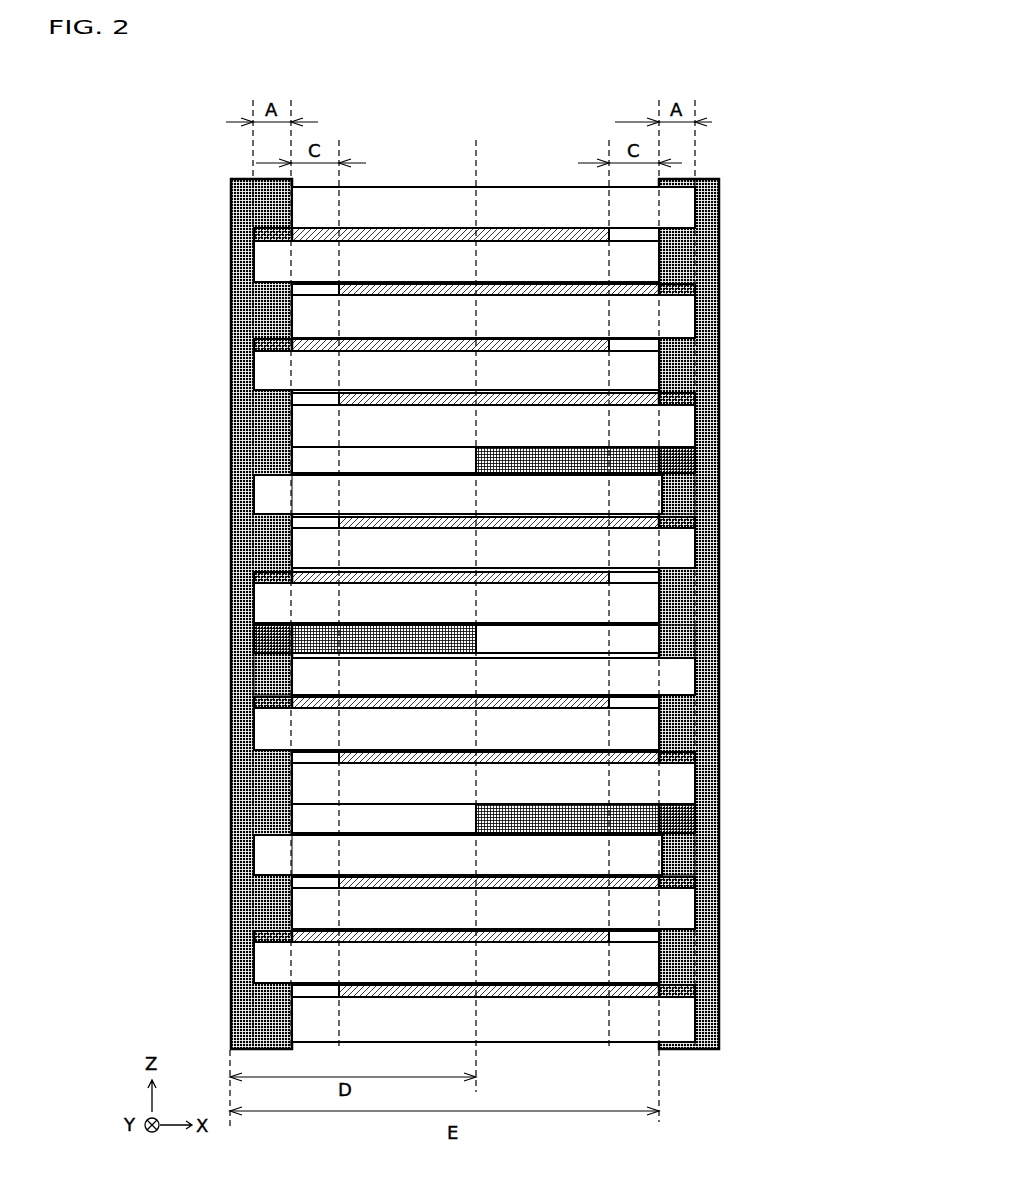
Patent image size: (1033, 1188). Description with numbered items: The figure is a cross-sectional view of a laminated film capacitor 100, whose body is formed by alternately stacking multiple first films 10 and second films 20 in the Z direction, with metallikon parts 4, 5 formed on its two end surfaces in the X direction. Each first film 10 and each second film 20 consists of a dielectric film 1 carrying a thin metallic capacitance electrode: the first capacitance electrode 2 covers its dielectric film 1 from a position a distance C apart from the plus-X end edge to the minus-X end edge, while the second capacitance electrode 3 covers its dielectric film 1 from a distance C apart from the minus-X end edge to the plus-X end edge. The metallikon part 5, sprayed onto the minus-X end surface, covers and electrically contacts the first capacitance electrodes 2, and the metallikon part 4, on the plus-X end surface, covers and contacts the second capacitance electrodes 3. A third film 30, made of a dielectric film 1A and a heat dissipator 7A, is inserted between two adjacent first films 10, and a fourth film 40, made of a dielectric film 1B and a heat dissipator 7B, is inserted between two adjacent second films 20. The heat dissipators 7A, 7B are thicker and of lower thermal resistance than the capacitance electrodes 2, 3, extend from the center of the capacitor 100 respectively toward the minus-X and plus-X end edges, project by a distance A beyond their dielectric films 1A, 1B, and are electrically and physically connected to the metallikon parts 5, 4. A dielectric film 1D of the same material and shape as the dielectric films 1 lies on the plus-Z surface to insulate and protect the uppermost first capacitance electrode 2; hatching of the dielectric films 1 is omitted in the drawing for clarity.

The laminated film capacitor 100 is at (746, 137).
The dielectric film 1D is at (693, 205).
The dielectric film 1 is at (258, 257).
The first capacitance electrode 2 is at (258, 233).
The second capacitance electrode 3 is at (690, 290).
The first film 10 is at (166, 264).
The second film 20 is at (788, 264).
The third film 30 is at (153, 661).
The fourth film 40 is at (800, 438).
The heat dissipator 7A is at (262, 636).
The dielectric film 1A is at (302, 664).
The heat dissipator 7B is at (687, 457).
The dielectric film 1B is at (657, 489).
The metallikon part 5 is at (231, 1049).
The metallikon part 4 is at (719, 1049).